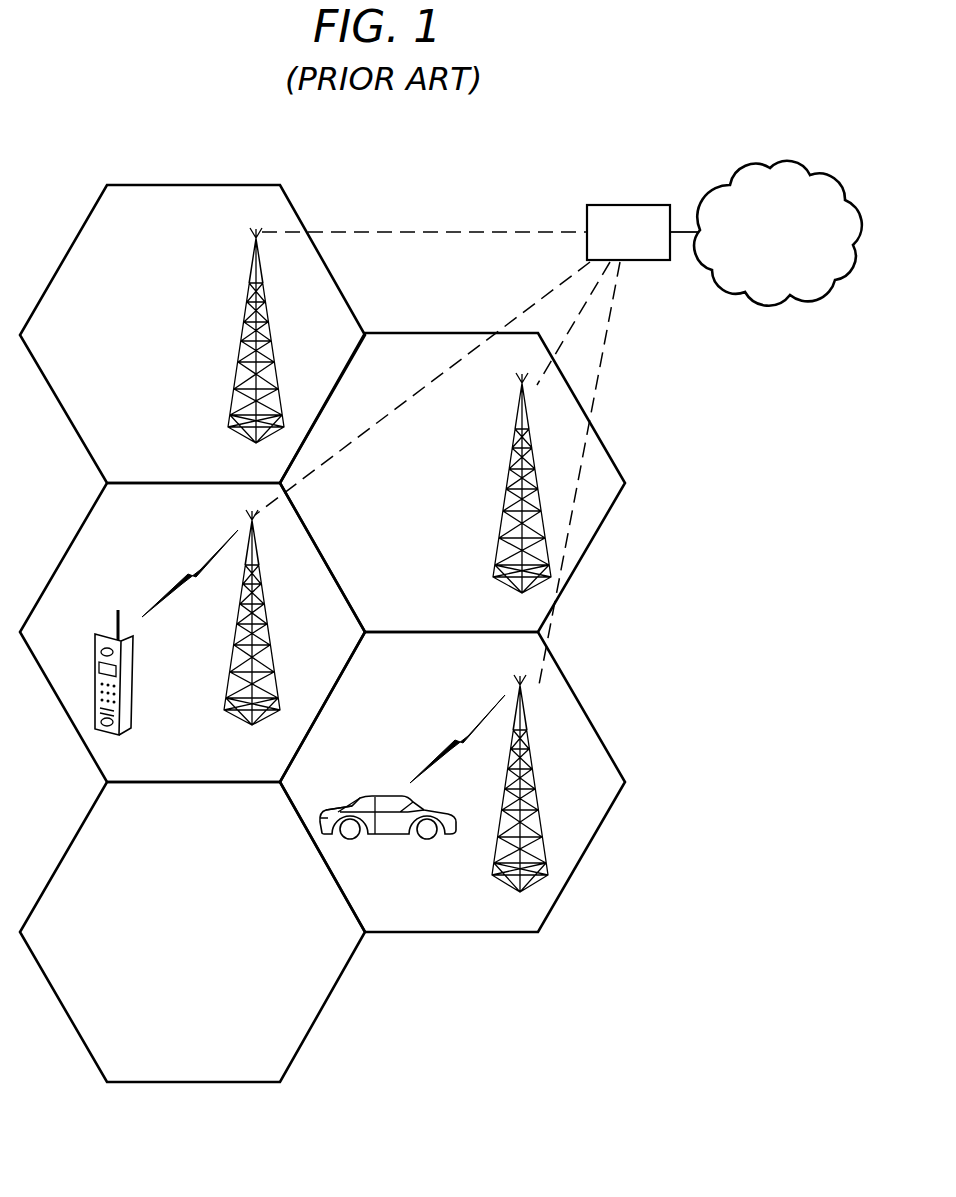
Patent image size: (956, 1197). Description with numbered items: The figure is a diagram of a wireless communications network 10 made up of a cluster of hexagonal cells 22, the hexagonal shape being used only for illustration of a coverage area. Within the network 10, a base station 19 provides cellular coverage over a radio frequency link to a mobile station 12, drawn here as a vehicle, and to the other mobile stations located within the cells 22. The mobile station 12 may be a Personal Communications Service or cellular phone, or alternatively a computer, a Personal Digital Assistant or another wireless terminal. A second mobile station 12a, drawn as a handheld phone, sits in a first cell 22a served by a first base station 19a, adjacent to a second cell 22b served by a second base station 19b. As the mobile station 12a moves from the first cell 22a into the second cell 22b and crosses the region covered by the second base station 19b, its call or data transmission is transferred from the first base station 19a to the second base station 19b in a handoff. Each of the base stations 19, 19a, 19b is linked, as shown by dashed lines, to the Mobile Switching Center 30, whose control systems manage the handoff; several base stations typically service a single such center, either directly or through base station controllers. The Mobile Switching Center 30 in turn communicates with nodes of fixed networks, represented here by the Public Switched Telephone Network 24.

The wireless communications network 10 is at (166, 102).
The mobile station 12 is at (378, 795).
The mobile station 12a is at (134, 698).
The base station 19 is at (240, 346).
The first base station 19a is at (226, 672).
The second base station 19b is at (494, 496).
The cell 22 is at (213, 270).
The first cell 22a is at (143, 558).
The second cell 22b is at (416, 573).
The Public Switched Telephone Network 24 is at (786, 297).
The Mobile Switching Center 30 is at (626, 205).